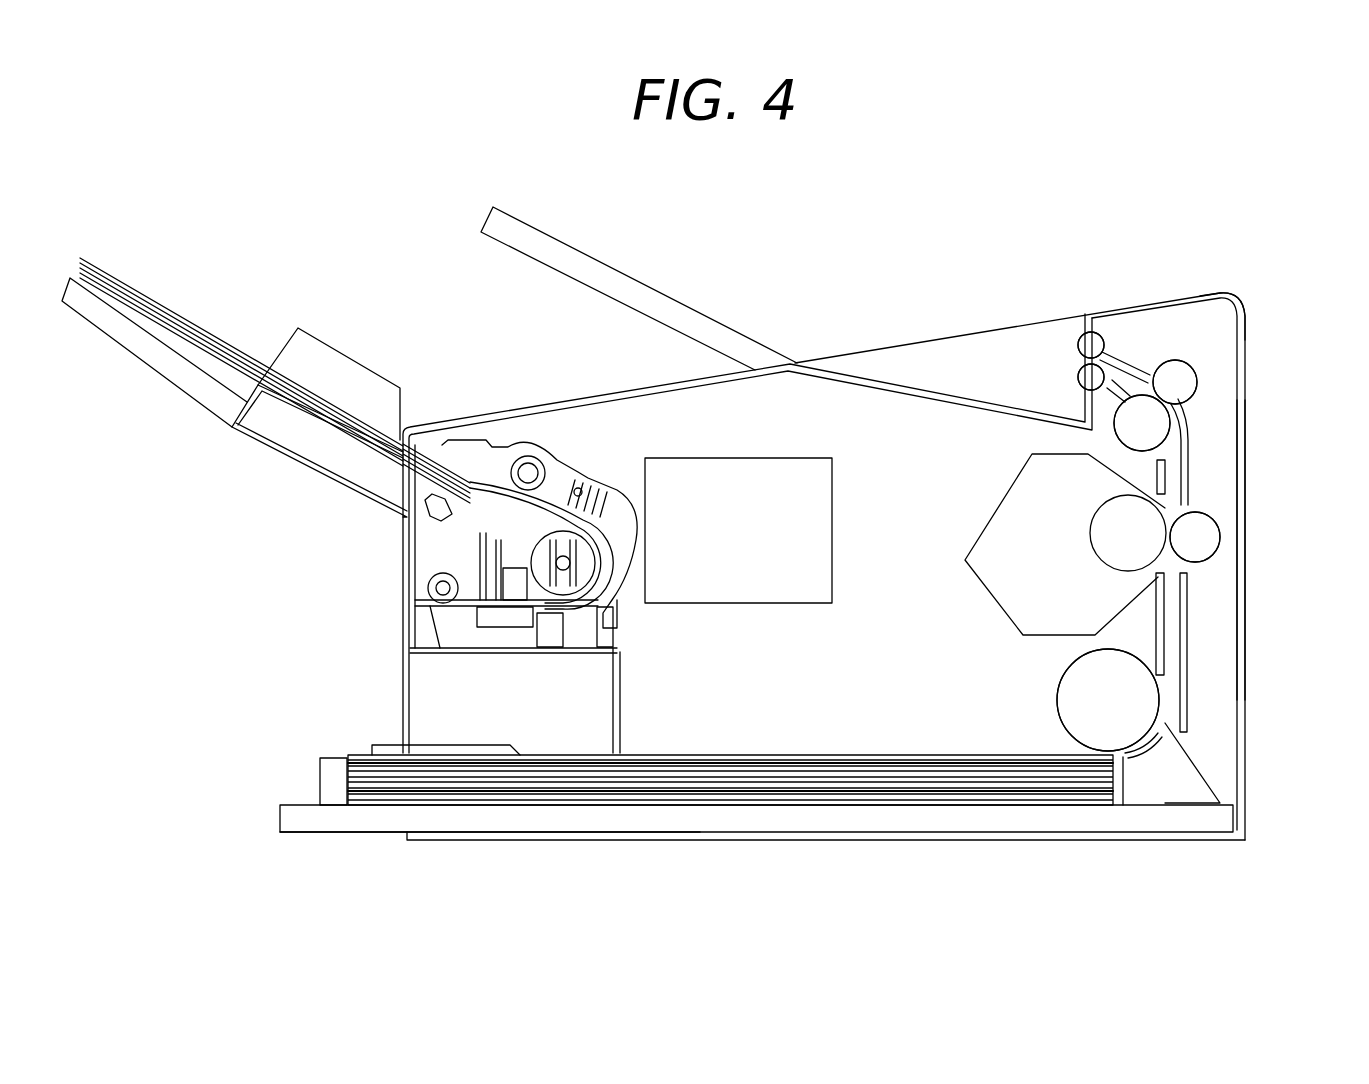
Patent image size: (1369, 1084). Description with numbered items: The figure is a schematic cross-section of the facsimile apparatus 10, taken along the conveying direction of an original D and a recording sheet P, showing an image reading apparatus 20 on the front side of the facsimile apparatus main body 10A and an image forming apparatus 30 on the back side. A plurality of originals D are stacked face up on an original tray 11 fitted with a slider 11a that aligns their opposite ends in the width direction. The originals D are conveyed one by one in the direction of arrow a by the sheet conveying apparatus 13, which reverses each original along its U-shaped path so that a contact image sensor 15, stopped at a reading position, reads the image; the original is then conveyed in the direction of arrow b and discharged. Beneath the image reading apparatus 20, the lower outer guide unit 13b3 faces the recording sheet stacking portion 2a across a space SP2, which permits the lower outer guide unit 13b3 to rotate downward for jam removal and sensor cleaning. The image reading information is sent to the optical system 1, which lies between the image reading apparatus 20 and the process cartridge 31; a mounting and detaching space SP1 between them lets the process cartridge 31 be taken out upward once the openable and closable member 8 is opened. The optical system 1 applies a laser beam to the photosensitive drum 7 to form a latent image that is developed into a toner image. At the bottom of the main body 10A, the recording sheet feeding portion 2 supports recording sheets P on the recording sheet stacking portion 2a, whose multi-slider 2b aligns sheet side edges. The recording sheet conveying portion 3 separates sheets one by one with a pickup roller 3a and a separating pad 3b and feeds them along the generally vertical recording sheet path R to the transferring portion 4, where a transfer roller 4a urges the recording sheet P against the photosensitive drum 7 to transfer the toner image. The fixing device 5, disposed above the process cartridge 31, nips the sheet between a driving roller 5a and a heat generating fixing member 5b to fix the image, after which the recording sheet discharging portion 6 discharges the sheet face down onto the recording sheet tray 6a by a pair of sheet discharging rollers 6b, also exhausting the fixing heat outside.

The original D is at (117, 278).
The original tray 11 is at (190, 360).
The slider 11a is at (315, 357).
The arrow a is at (258, 337).
The arrow b is at (390, 600).
The sheet conveying apparatus 13 is at (515, 440).
The contact image sensor 15 is at (493, 623).
The lower outer guide unit 13b3 is at (450, 650).
The image reading apparatus 20 is at (385, 570).
The optical system 1 is at (785, 460).
The recording sheet tray 6a is at (632, 275).
The openable and closable member 8 is at (852, 372).
The facsimile apparatus 10 is at (947, 307).
The facsimile apparatus main body 10A is at (1243, 292).
The recording sheet discharging portion 6 is at (1114, 333).
The sheet discharging rollers 6b is at (1080, 370).
The fixing device 5 is at (1202, 405).
The driving roller 5a is at (1155, 437).
The fixing member 5b is at (1198, 375).
The photosensitive drum 7 is at (1153, 512).
The transferring portion 4 is at (1202, 581).
The transfer roller 4a is at (1213, 538).
The image forming apparatus 30 is at (1250, 505).
The process cartridge 31 is at (983, 598).
The recording sheet path R is at (1172, 633).
The recording sheet conveying portion 3 is at (1192, 740).
The pickup roller 3a is at (1097, 725).
The separating pad 3b is at (1147, 750).
The recording sheet feeding portion 2 is at (780, 846).
The recording sheet stacking portion 2a is at (357, 820).
The multi-slider 2b is at (387, 745).
The recording sheet P is at (718, 753).
The mounting and detaching space SP1 is at (930, 535).
The space SP2 is at (585, 732).